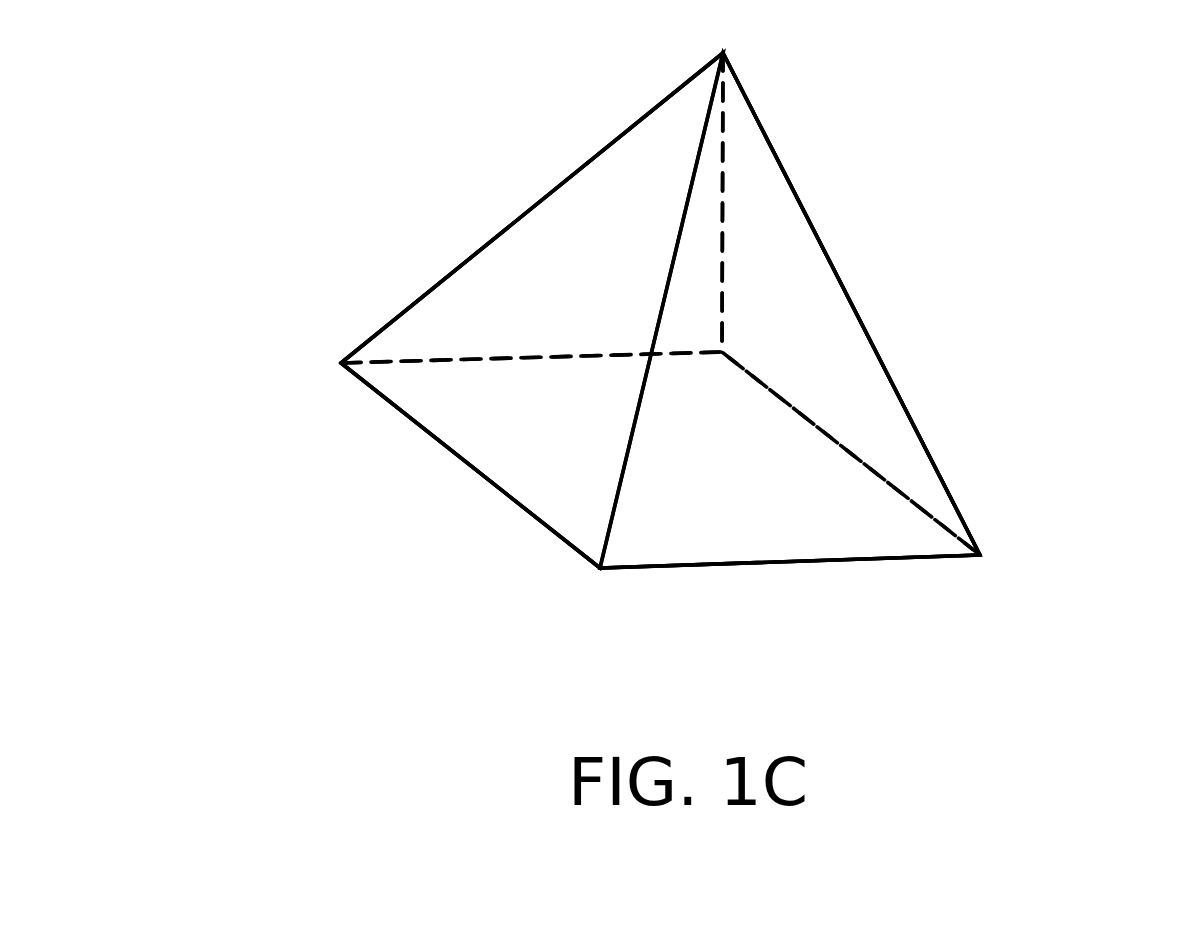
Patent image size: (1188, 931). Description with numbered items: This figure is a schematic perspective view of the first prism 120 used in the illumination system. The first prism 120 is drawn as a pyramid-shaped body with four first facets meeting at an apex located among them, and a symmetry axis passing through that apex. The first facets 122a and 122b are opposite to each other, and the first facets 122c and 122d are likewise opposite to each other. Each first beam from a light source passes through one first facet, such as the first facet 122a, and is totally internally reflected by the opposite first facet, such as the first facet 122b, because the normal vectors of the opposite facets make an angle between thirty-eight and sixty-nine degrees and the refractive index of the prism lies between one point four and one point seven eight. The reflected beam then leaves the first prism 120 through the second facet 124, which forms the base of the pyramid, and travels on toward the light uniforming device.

The first prism 120 is at (1050, 629).
The first facet 122a is at (742, 208).
The first facet 122b is at (542, 312).
The first facet 122c is at (637, 227).
The first facet 122d is at (790, 330).
The second facet 124 is at (727, 487).